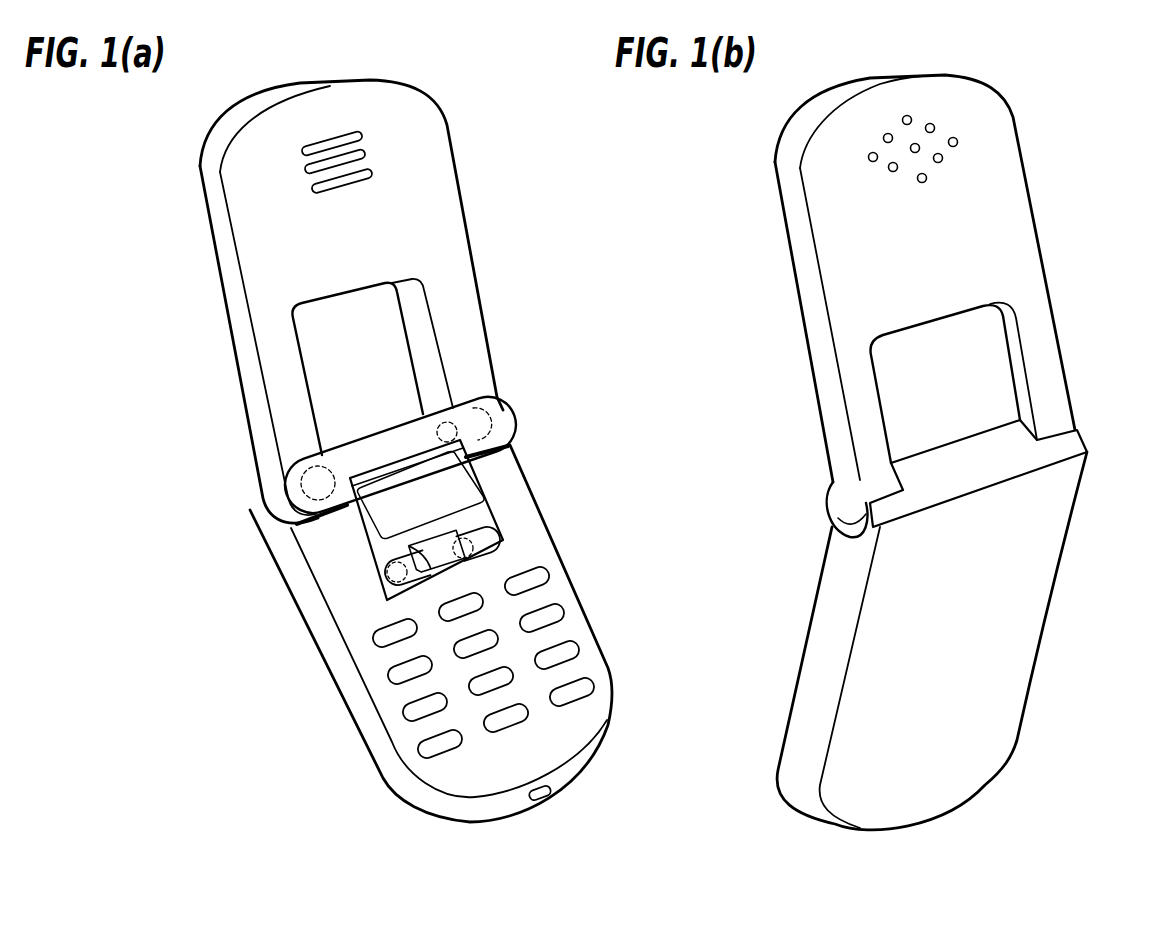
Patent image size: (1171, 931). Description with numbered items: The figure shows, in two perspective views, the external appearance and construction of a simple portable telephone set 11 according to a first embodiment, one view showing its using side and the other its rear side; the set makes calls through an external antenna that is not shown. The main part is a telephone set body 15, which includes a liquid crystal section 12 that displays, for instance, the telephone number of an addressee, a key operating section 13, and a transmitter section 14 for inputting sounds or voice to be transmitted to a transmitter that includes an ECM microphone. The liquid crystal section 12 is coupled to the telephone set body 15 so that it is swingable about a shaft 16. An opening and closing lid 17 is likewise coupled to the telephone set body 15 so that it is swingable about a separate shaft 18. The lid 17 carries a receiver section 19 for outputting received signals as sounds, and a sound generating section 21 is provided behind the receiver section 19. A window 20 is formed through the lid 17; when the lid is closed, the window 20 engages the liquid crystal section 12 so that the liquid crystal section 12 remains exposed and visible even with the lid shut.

In FIG. 1A, the simple portable telephone set 11 is at (527, 326).
In FIG. 1A, the liquid crystal section 12 is at (372, 533).
In FIG. 1A, the key operating section 13 is at (590, 680).
In FIG. 1A, the transmitter section 14 is at (550, 787).
In FIG. 1A, the telephone set body 15 is at (503, 478).
In FIG. 1B, the telephone set body 15 is at (1027, 600).
In FIG. 1A, the shaft 16 is at (497, 532).
In FIG. 1A, the opening and closing lid 17 is at (423, 211).
In FIG. 1B, the opening and closing lid 17 is at (993, 237).
In FIG. 1A, the shaft 18 is at (492, 421).
In FIG. 1A, the receiver section 19 is at (372, 177).
In FIG. 1A, the window 20 is at (373, 323).
In FIG. 1B, the sound generating section 21 is at (958, 140).